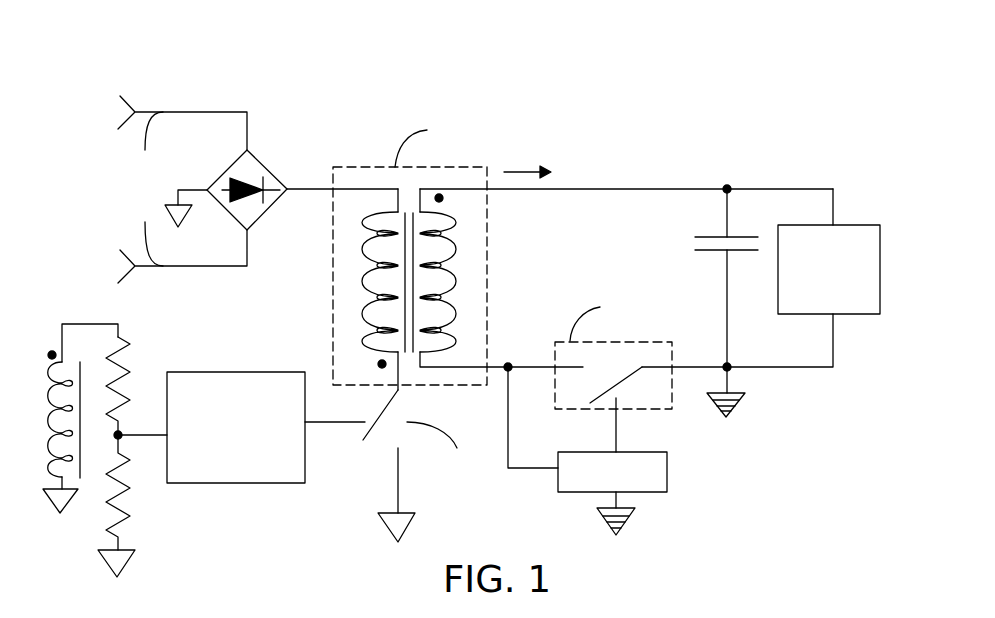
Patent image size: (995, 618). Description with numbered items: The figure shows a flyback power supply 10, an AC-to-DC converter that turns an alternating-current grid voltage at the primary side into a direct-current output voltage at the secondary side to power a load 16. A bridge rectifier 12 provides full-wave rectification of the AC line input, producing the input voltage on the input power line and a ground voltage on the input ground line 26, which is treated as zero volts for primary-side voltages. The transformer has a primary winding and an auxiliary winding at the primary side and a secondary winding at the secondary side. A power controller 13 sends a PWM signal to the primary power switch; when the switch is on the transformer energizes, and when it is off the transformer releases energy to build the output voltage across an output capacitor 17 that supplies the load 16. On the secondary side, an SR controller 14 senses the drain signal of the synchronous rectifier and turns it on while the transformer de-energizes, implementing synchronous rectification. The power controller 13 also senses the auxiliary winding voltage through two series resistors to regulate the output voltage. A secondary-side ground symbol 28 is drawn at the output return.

The flyback power supply 10 is at (508, 78).
The bridge rectifier 12 is at (257, 157).
The power controller 13 is at (251, 433).
The SR controller 14 is at (668, 472).
The load 16 is at (845, 293).
The output capacitor 17 is at (692, 244).
The input ground line 26 is at (388, 513).
The secondary ground 28 is at (735, 407).